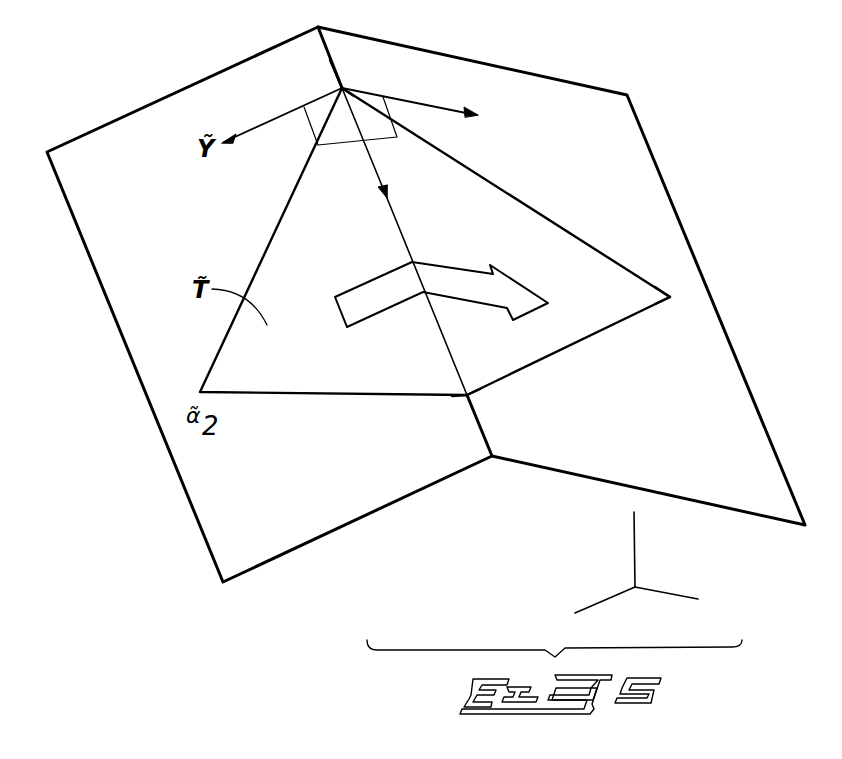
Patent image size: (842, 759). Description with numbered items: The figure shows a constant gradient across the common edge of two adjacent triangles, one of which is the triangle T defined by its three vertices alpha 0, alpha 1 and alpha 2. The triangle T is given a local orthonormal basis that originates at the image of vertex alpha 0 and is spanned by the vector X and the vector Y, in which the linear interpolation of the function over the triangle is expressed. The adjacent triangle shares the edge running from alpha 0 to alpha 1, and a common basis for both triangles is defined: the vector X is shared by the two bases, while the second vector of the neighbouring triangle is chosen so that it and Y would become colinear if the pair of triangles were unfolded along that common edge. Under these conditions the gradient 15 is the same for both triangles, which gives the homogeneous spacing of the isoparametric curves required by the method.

The gradient 15 is at (447, 282).
The triangle T is at (580, 275).
The local basis vector X is at (370, 158).
The local basis vector Y is at (422, 111).
The vertex alpha- 0 is at (351, 72).
The vertex alpha- 1 is at (460, 412).
The vertex alpha- 2 is at (677, 312).